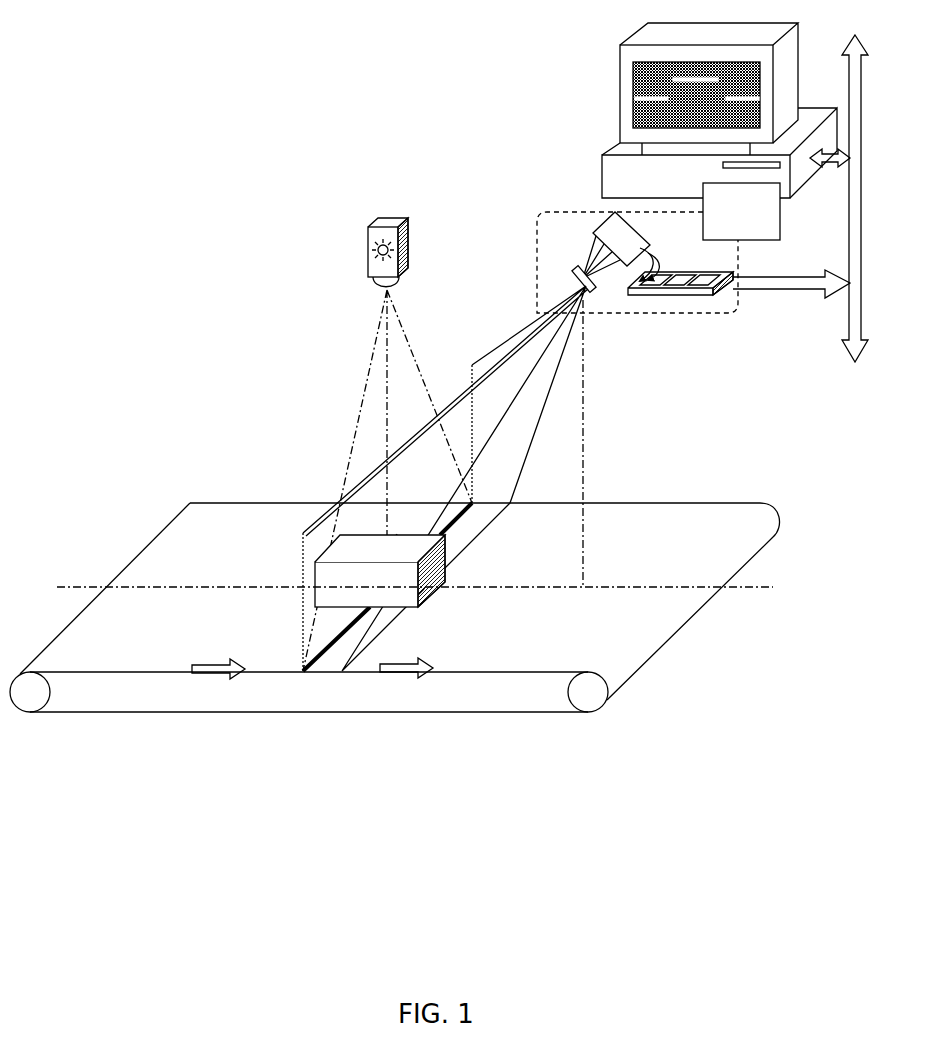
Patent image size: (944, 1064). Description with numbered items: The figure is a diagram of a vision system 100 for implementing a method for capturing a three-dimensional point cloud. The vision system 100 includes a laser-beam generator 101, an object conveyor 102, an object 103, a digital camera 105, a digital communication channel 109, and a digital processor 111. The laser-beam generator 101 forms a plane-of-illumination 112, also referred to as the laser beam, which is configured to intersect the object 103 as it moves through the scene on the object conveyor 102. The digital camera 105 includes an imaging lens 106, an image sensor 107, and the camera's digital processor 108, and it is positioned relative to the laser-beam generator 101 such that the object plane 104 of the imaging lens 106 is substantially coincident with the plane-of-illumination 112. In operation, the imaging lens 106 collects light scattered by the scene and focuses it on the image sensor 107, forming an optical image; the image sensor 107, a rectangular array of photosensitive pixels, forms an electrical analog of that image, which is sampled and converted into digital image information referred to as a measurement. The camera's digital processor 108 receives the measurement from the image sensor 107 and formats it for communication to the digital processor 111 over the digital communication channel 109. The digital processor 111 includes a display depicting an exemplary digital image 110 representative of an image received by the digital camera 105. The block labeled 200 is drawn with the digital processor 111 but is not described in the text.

The vision system 100 is at (279, 184).
The laser-beam generator 101 is at (375, 225).
The object conveyor 102 is at (197, 514).
The object 103 is at (338, 587).
The object plane 104 is at (473, 366).
The digital camera 105 is at (541, 213).
The imaging lens 106 is at (574, 283).
The image sensor 107 is at (633, 239).
The camera's digital processor 108 is at (678, 296).
The digital communication channel 109 is at (852, 258).
The digital image 110 is at (638, 84).
The digital processor 111 is at (606, 153).
The plane-of-illumination 112 is at (366, 385).
The processor 200 is at (741, 211).